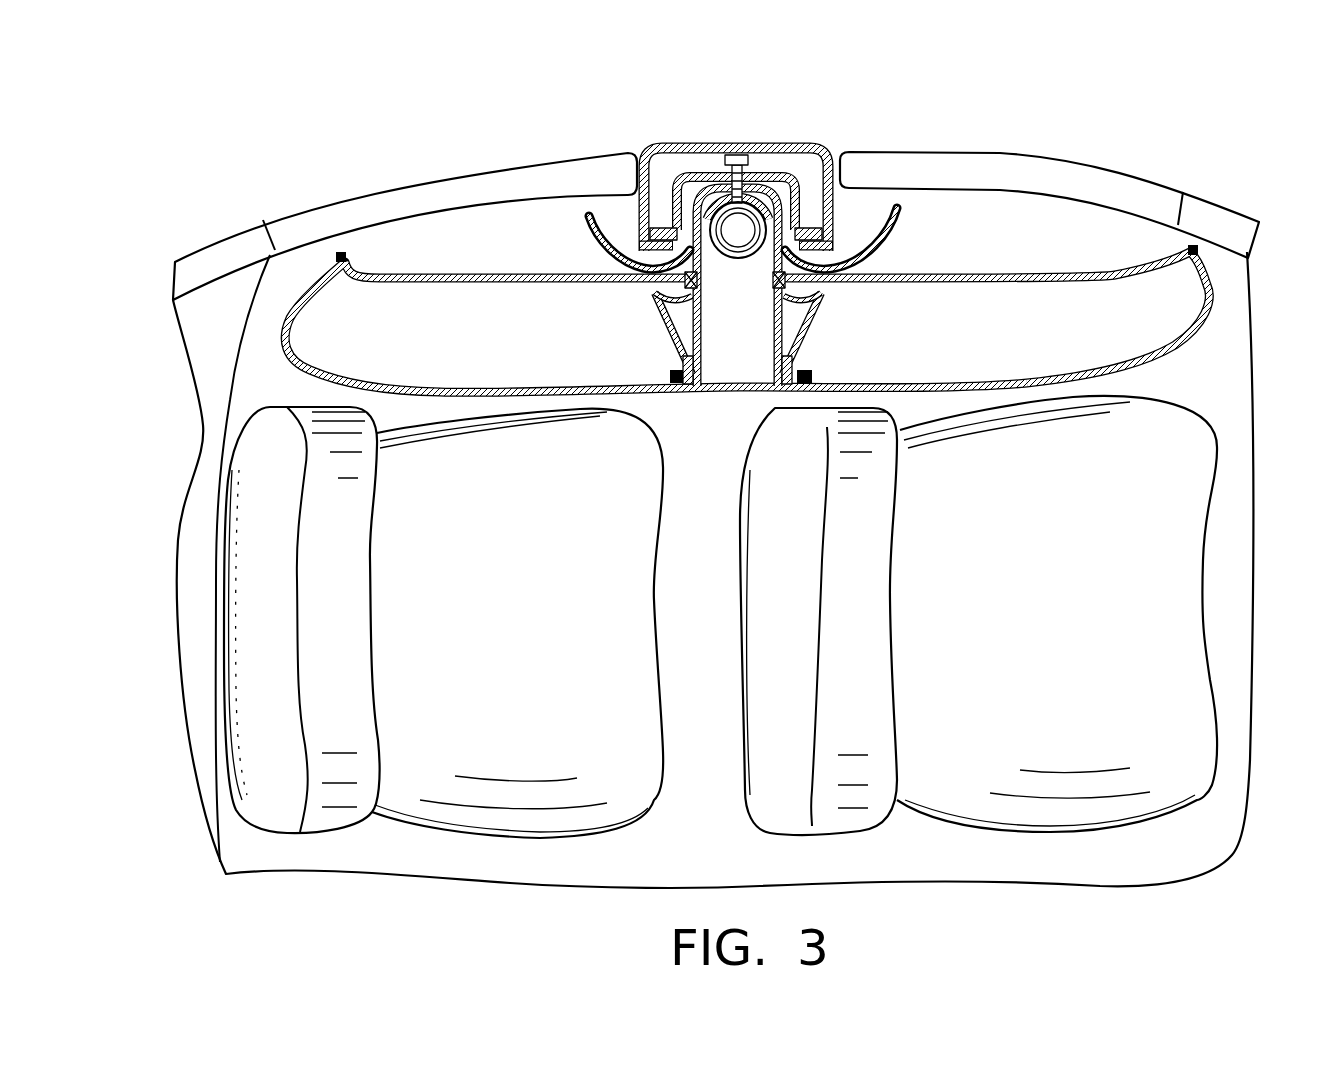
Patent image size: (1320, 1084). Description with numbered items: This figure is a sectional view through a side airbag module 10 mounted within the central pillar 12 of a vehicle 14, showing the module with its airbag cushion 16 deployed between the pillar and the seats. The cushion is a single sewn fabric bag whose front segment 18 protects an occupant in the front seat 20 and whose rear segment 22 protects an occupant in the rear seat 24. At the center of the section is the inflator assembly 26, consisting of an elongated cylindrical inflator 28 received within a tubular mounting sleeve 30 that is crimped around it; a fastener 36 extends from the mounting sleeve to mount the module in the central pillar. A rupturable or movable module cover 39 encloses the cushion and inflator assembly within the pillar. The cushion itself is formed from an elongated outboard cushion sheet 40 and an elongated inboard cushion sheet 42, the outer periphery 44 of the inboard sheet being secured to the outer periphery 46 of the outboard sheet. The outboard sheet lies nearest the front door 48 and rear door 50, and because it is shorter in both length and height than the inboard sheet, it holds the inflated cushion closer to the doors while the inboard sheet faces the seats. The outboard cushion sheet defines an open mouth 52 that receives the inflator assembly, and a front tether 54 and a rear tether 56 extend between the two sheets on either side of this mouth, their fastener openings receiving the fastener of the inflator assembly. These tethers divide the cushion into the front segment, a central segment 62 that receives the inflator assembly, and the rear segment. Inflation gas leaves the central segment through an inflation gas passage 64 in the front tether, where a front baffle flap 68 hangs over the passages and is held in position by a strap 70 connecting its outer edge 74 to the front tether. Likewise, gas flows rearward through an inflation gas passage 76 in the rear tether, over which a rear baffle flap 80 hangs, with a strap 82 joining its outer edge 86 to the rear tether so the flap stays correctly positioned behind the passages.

The side airbag module 10 is at (780, 284).
The central pillar 12 is at (814, 152).
The vehicle 14 is at (1200, 166).
The airbag cushion 16 is at (780, 353).
The front segment 18 is at (1020, 390).
The front seat 20 is at (1027, 834).
The rear segment 22 is at (508, 402).
The rear seat 24 is at (497, 832).
The inflator assembly 26 is at (755, 263).
The inflator 28 is at (714, 183).
The tubular mounting sleeve 30 is at (700, 190).
The fastener 36 is at (738, 155).
The module cover 39 is at (888, 238).
The outboard cushion sheet 40 is at (515, 273).
The inboard cushion sheet 42 is at (468, 388).
The outer periphery 44 is at (340, 262).
The outer periphery 46 is at (347, 257).
The front door 48 is at (1000, 153).
The rear door 50 is at (515, 168).
The open mouth 52 is at (768, 178).
The front tether 54 is at (800, 362).
The rear tether 56 is at (680, 362).
The central segment 62 is at (760, 392).
The inflation gas passage 64 is at (774, 348).
The front baffle flap 68 is at (795, 320).
The strap 70 is at (822, 293).
The outer edge 74 is at (816, 300).
The inflation gas passage 76 is at (702, 345).
The rear baffle flap 80 is at (668, 314).
The strap 82 is at (656, 292).
The outer edge 86 is at (660, 299).